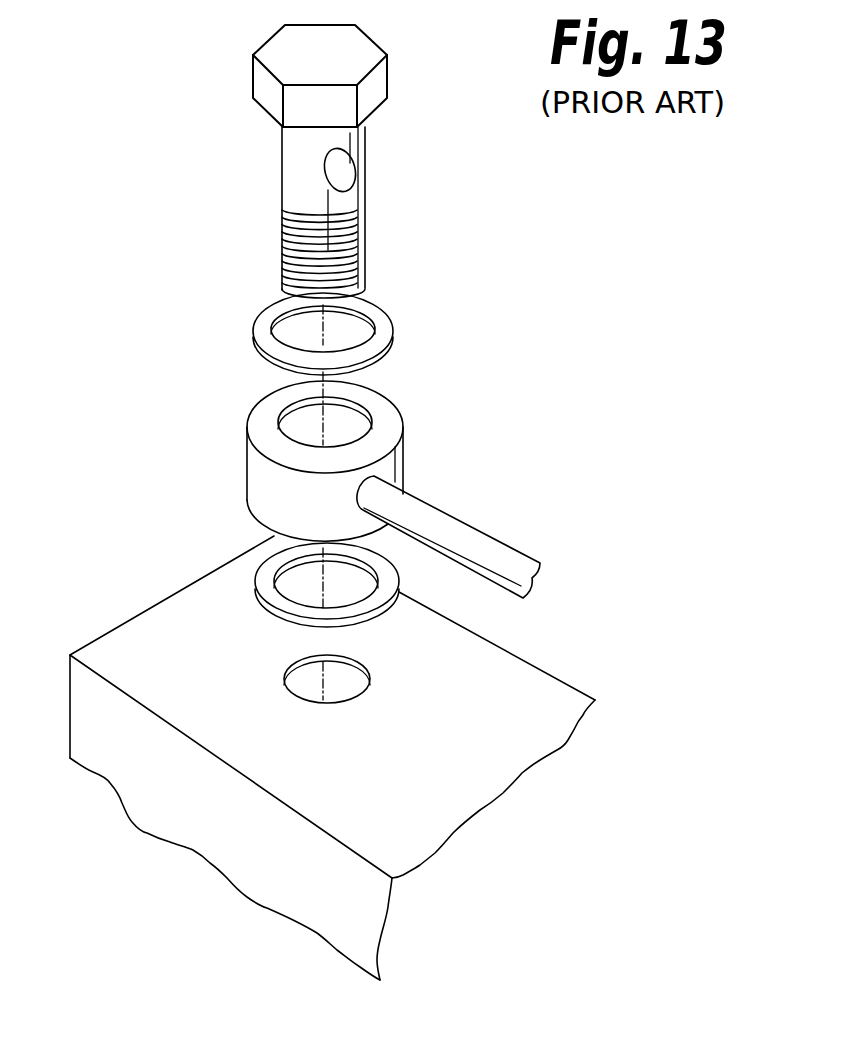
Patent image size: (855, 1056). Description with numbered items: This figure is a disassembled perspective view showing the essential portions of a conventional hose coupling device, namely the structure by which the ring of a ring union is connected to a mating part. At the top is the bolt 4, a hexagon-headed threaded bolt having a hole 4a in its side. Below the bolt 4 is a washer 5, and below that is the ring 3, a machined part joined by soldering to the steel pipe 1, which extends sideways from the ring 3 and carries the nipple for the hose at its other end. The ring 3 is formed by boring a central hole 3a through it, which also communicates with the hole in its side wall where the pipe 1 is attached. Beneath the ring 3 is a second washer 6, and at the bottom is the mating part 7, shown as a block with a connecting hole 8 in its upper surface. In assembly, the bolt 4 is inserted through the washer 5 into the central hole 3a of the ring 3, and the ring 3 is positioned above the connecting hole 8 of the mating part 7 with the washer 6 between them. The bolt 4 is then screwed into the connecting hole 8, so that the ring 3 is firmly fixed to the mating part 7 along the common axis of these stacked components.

The steel pipe 1 is at (484, 531).
The ring 3 is at (403, 413).
The central hole 3a is at (292, 417).
The bolt 4 is at (355, 43).
The hole 4a is at (340, 166).
The washer 5 is at (392, 312).
The washer 6 is at (270, 563).
The mating part 7 is at (190, 600).
The connecting hole 8 is at (293, 687).